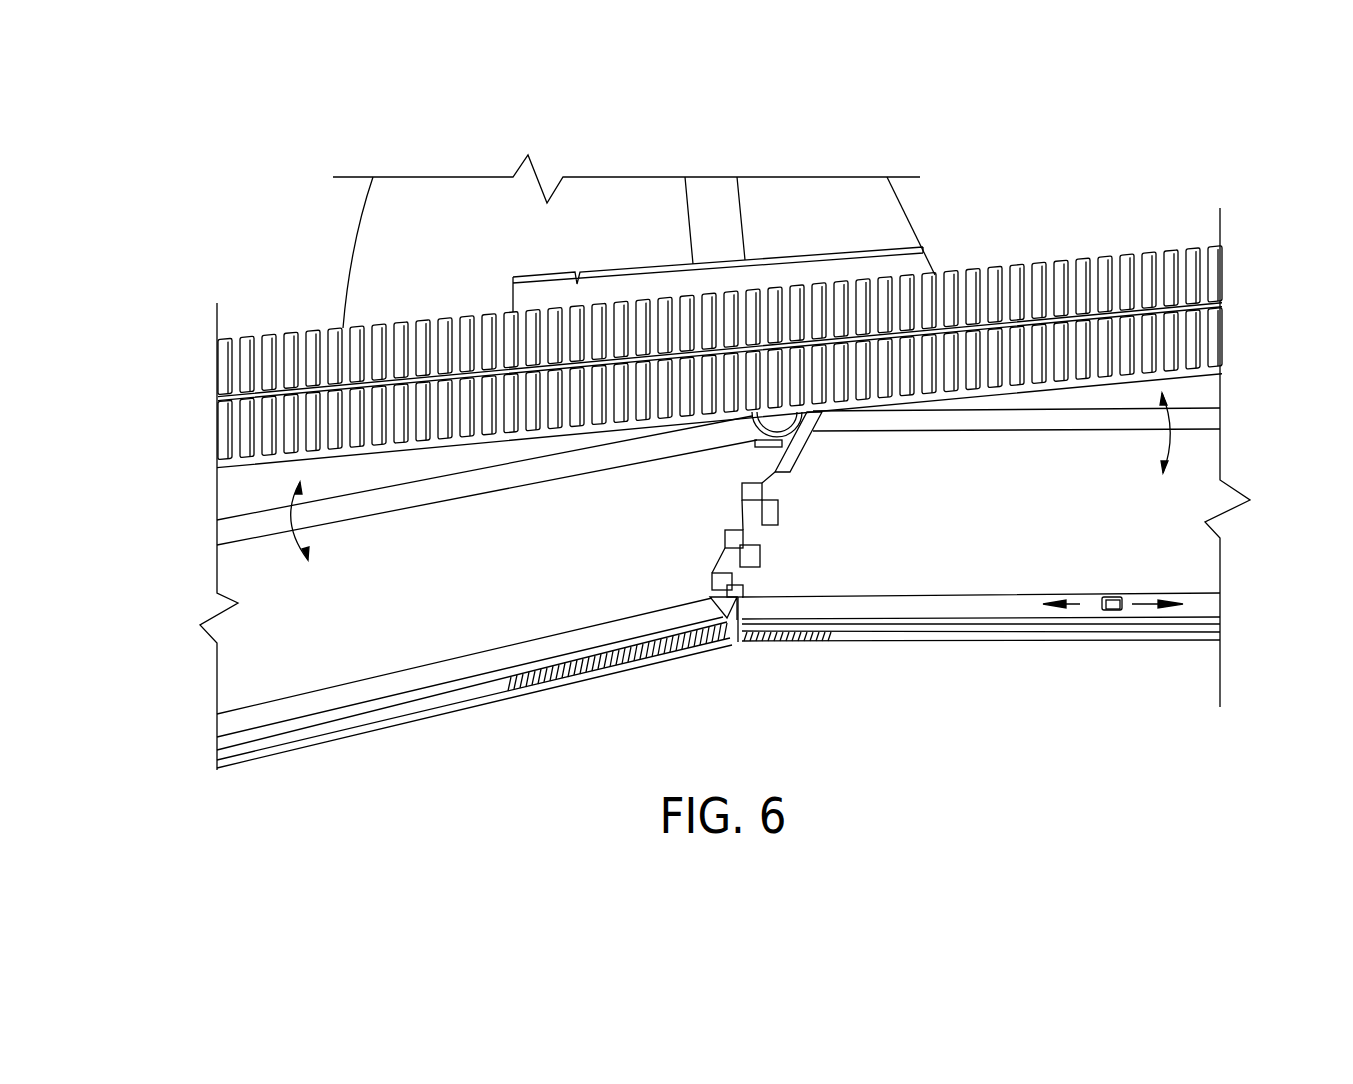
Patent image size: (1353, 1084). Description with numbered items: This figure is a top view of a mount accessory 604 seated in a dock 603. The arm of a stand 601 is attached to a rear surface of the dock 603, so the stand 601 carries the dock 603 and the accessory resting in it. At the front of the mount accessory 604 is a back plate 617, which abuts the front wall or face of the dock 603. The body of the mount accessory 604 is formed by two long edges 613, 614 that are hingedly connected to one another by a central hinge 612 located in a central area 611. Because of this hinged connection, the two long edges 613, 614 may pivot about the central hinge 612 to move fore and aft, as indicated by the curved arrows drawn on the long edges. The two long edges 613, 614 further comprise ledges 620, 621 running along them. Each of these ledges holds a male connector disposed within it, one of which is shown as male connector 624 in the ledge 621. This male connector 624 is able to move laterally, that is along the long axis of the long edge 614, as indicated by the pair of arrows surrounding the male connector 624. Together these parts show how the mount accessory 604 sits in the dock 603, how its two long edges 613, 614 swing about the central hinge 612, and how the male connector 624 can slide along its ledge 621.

The stand 601 is at (662, 252).
The dock 603 is at (322, 362).
The mount accessory 604 is at (272, 421).
The back plate 617 is at (1163, 348).
The long edge 613 is at (237, 528).
The long edge 614 is at (1193, 418).
The central area 611 is at (812, 453).
The central hinge 612 is at (732, 560).
The ledge 620 is at (418, 712).
The ledge 621 is at (952, 635).
The male connector 624 is at (1112, 612).